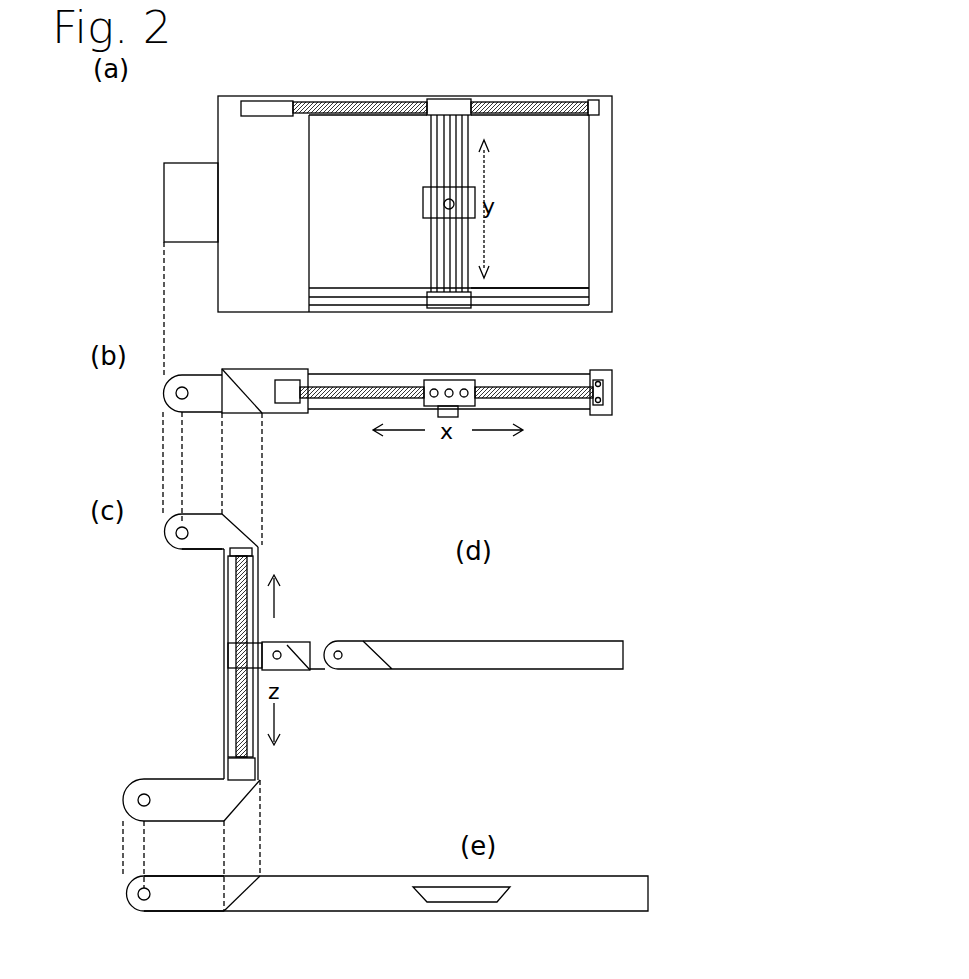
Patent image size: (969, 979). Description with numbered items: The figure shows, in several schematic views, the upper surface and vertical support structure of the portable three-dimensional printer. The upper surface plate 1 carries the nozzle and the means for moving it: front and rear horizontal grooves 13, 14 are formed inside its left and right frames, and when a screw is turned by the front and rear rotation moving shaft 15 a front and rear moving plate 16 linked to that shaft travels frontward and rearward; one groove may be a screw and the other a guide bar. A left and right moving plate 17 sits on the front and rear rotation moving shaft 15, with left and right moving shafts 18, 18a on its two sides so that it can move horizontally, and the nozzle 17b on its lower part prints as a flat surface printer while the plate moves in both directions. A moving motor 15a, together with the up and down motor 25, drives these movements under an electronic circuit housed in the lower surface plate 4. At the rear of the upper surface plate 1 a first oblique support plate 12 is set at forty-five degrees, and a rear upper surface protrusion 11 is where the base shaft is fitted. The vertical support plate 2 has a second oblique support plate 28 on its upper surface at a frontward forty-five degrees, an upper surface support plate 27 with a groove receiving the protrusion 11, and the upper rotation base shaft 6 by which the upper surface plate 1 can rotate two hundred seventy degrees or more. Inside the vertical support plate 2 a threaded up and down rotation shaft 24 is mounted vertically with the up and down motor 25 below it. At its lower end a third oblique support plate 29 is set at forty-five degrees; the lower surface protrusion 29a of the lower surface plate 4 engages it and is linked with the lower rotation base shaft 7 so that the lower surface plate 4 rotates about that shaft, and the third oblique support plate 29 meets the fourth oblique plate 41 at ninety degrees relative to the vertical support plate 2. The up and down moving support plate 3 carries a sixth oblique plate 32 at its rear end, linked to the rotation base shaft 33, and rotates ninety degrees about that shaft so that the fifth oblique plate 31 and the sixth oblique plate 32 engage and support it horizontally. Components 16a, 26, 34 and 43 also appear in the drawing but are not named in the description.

The upper surface plate 1 is at (606, 200).
The vertical support plate 2 is at (222, 607).
The up and down moving support plate 3 is at (555, 645).
The lower surface plate 4 is at (612, 900).
The upper rotation base shaft 6 is at (176, 398).
The lower rotation base shaft 7 is at (138, 800).
The rear upper surface protrusion 11 is at (188, 206).
The first oblique support plate 12 is at (245, 402).
The front and rear horizontal groove 13 is at (376, 108).
The front and rear horizontal groove 14 is at (540, 288).
The front and rear rotation moving shaft 15 is at (550, 104).
The moving motor 15a is at (265, 105).
The front and rear moving plate 16 is at (450, 99).
The slider 16a is at (433, 308).
The left and right moving plate 17 is at (423, 205).
The nozzle 17b is at (458, 417).
The left and right moving shaft 18 is at (430, 140).
The left and right moving shaft 18a is at (466, 128).
The up and down rotation shaft 24 is at (236, 715).
The up and down motor 25 is at (250, 770).
The lower bracket 26 is at (152, 786).
The upper surface support plate 27 is at (180, 552).
The second oblique support plate 28 is at (240, 520).
The third oblique support plate 29 is at (243, 805).
The lower surface protrusion 29a is at (180, 906).
The fifth oblique support plate 31 is at (290, 658).
The sixth oblique support plate 32 is at (370, 650).
The rotation base shaft 33 is at (278, 650).
The slider 34 is at (226, 655).
The fourth oblique plate 41 is at (245, 896).
The recess 43 is at (460, 897).